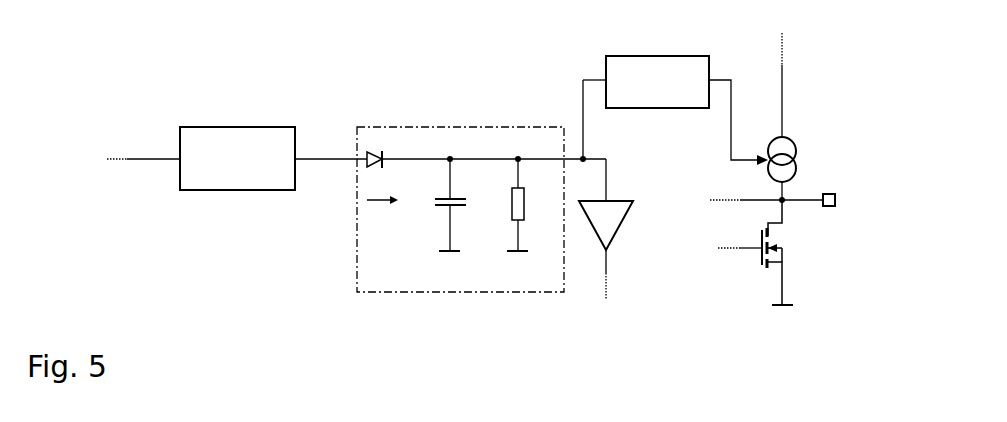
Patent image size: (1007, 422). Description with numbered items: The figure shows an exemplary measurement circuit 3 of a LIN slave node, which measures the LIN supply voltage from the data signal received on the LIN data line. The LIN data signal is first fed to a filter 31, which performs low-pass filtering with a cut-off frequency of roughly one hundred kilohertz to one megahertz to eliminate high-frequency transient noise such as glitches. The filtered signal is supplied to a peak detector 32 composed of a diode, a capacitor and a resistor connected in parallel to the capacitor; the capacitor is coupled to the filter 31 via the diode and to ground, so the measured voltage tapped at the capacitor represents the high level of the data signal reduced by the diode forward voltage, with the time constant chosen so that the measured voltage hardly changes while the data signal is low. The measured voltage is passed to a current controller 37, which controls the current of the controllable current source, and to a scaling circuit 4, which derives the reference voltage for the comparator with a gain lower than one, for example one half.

The measurement circuit 3 is at (388, 53).
The filter 31 is at (237, 158).
The peak detector 32 is at (481, 220).
The current controller 37 is at (675, 110).
The scaling circuit 4 is at (633, 234).